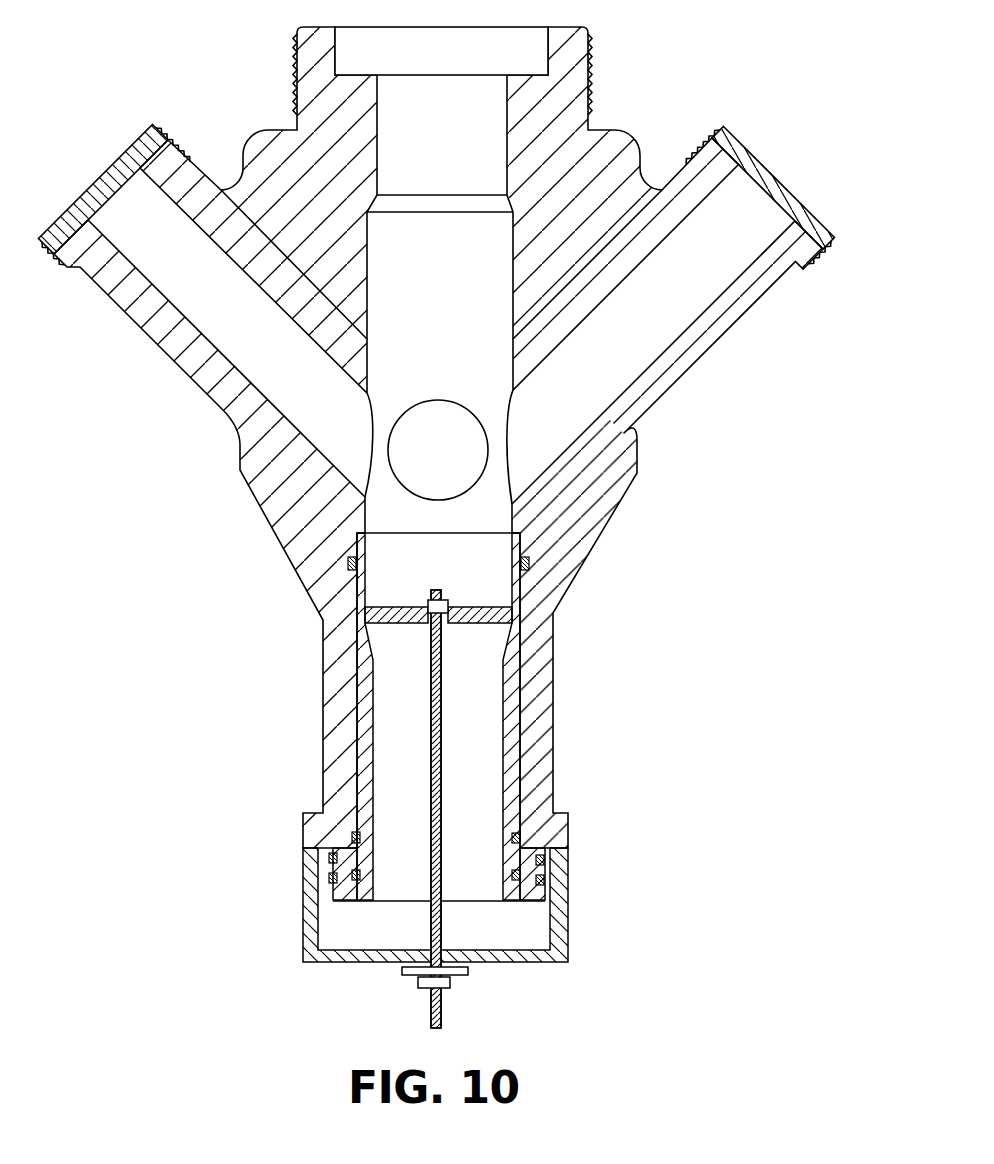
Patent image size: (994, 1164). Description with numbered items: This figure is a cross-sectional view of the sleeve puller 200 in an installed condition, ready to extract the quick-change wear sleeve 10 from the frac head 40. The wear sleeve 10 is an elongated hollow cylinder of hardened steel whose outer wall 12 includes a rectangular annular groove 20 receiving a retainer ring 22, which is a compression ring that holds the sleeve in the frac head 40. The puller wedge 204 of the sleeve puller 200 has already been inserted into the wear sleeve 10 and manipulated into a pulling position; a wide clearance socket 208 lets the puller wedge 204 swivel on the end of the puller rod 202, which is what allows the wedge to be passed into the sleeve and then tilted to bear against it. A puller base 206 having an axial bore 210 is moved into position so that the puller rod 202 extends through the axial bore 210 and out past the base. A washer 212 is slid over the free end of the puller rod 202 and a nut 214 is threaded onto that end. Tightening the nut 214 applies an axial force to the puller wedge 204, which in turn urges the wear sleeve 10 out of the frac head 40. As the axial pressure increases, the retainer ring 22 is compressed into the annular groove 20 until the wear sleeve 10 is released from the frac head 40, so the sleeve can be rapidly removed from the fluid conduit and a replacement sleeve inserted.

The quick-change wear sleeve 10 is at (421, 745).
The outer wall 12 is at (520, 663).
The annular groove 20 is at (360, 836).
The retainer ring 22 is at (508, 824).
The frac head 40 is at (662, 485).
The sleeve puller 200 is at (452, 790).
The puller rod 202 is at (445, 698).
The puller wedge 204 is at (363, 645).
The puller base 206 is at (380, 958).
The wide clearance socket 208 is at (445, 602).
The axial bore 210 is at (444, 960).
The washer 212 is at (470, 972).
The nut 214 is at (450, 982).